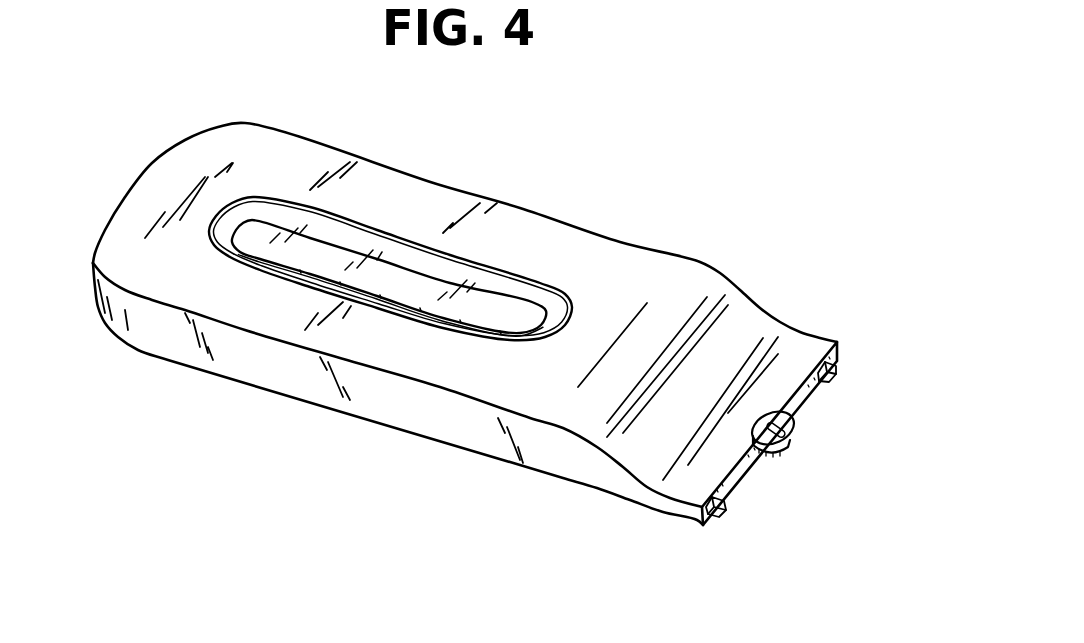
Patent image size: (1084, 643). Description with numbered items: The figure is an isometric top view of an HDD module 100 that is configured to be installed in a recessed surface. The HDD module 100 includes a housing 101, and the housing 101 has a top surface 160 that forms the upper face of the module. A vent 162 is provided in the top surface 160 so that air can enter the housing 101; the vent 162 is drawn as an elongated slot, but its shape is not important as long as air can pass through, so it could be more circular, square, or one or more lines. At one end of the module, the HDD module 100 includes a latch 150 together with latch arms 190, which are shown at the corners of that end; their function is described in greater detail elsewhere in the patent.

The HDD module 100 is at (484, 341).
The housing 101 is at (278, 389).
The top surface 160 is at (461, 330).
The vent 162 is at (440, 313).
The latch 150 is at (795, 441).
The latch arms 190 is at (722, 507).